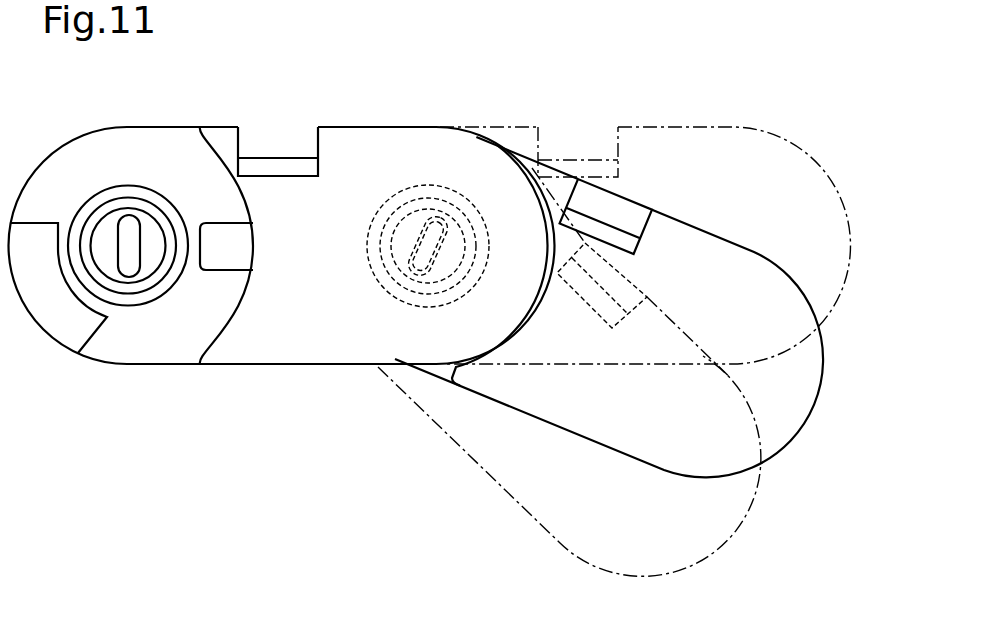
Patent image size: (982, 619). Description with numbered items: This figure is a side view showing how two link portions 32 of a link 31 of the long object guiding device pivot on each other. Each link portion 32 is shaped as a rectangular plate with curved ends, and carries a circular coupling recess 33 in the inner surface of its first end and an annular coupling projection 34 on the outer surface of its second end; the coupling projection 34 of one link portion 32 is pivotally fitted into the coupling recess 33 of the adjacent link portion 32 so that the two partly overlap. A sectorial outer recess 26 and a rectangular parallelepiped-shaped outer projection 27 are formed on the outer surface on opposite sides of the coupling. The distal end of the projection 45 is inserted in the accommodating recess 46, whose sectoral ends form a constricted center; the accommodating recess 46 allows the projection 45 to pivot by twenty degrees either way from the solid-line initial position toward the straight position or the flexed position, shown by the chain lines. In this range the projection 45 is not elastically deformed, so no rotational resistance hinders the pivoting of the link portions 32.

The outer recess 26 is at (48, 318).
The outer projection 27 is at (234, 242).
The link 31 is at (99, 126).
The link portion 32 is at (175, 126).
The coupling recess 33 is at (458, 254).
The coupling projection 34 is at (141, 202).
The projection 45 is at (122, 222).
The accommodating recess 46 is at (440, 210).